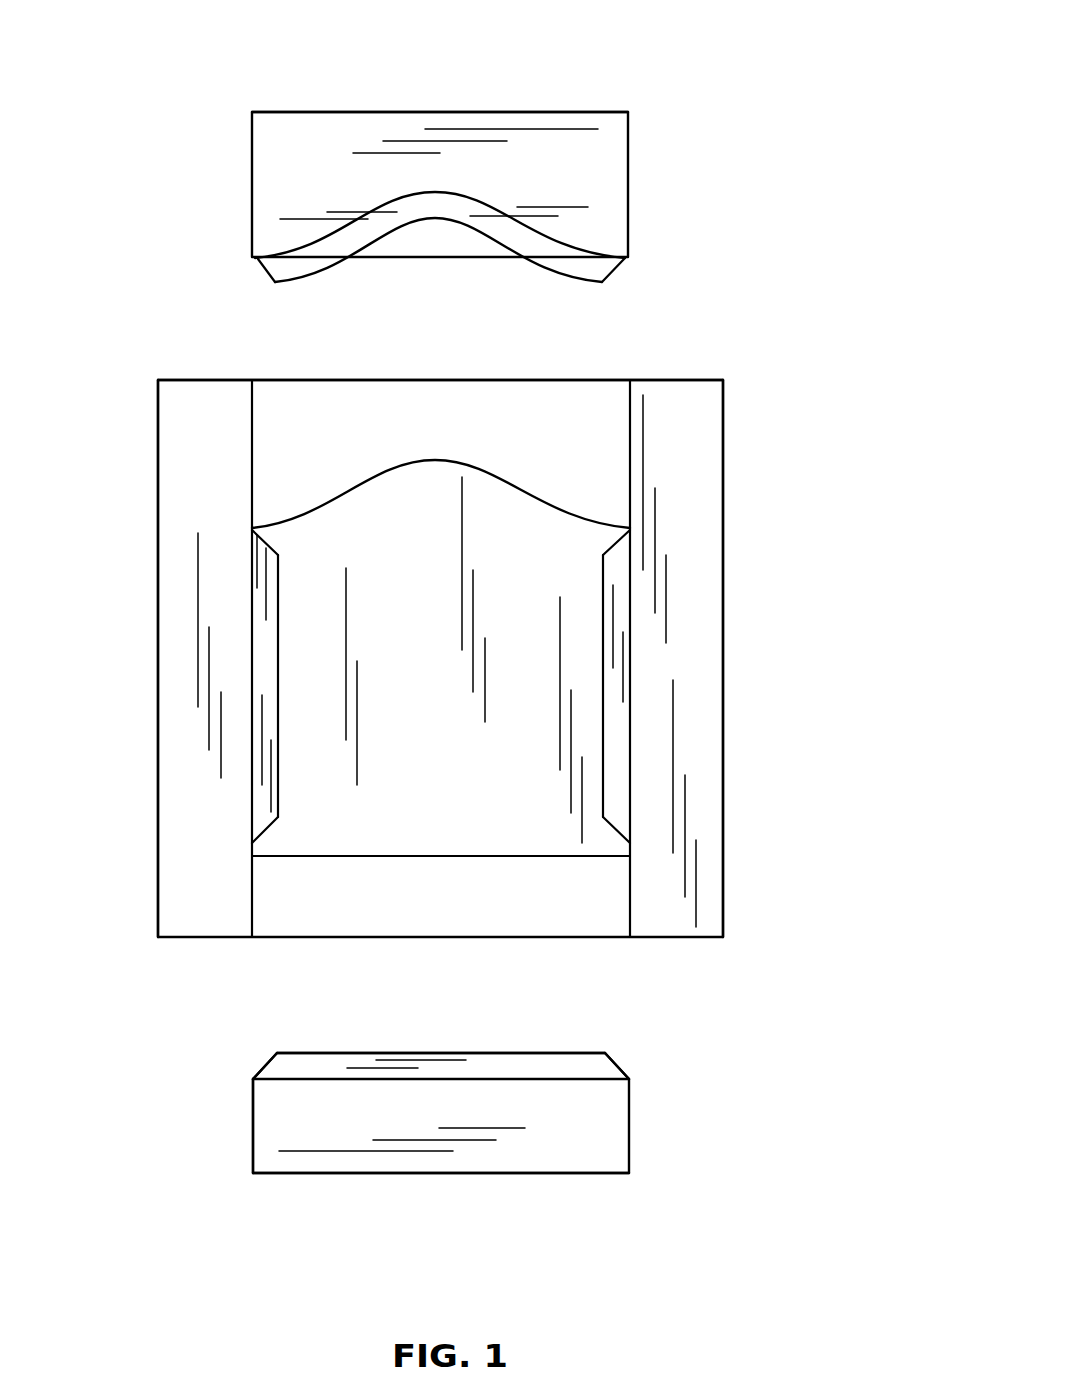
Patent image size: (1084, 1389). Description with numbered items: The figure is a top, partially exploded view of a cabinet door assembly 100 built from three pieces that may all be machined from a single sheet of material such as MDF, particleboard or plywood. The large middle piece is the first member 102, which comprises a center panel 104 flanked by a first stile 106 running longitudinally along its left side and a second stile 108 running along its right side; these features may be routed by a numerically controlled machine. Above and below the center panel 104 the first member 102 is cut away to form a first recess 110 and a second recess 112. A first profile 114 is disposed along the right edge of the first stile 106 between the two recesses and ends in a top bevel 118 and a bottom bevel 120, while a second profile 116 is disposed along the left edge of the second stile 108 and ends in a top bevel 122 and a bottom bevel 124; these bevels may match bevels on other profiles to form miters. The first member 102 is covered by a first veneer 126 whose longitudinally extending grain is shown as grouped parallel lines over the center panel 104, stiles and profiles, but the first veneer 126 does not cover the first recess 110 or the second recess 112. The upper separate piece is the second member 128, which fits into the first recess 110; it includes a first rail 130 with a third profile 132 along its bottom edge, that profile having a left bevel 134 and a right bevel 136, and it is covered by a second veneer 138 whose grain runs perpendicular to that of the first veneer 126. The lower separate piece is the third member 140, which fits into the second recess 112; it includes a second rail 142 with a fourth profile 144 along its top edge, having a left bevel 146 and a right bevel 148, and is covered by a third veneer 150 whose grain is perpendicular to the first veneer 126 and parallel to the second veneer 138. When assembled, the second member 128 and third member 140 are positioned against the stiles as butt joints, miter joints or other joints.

The cabinet door assembly 100 is at (852, 76).
The first member 102 is at (738, 495).
The center panel 104 is at (425, 485).
The first stile 106 is at (183, 507).
The second stile 108 is at (697, 585).
The first recess 110 is at (288, 393).
The second recess 112 is at (445, 905).
The first profile 114 is at (262, 808).
The second profile 116 is at (622, 793).
The top bevel 118 is at (255, 530).
The bottom bevel 120 is at (262, 808).
The top bevel 122 is at (617, 528).
The bottom bevel 124 is at (630, 845).
The first veneer 126 is at (198, 622).
The second member 128 is at (645, 210).
The first rail 130 is at (308, 133).
The third profile 132 is at (268, 263).
The left bevel 134 is at (256, 282).
The right bevel 136 is at (622, 282).
The second veneer 138 is at (580, 133).
The third member 140 is at (644, 1117).
The second rail 142 is at (575, 1158).
The fourth profile 144 is at (548, 1065).
The left bevel 146 is at (262, 1067).
The right bevel 148 is at (617, 1063).
The third veneer 150 is at (363, 1150).